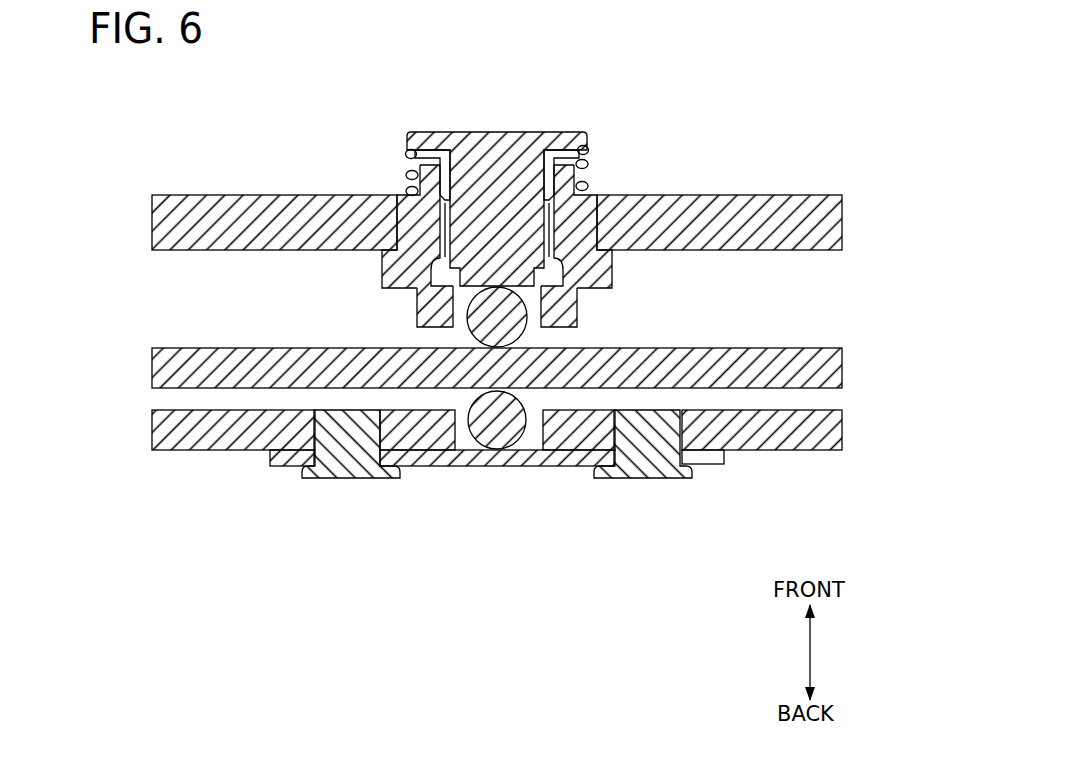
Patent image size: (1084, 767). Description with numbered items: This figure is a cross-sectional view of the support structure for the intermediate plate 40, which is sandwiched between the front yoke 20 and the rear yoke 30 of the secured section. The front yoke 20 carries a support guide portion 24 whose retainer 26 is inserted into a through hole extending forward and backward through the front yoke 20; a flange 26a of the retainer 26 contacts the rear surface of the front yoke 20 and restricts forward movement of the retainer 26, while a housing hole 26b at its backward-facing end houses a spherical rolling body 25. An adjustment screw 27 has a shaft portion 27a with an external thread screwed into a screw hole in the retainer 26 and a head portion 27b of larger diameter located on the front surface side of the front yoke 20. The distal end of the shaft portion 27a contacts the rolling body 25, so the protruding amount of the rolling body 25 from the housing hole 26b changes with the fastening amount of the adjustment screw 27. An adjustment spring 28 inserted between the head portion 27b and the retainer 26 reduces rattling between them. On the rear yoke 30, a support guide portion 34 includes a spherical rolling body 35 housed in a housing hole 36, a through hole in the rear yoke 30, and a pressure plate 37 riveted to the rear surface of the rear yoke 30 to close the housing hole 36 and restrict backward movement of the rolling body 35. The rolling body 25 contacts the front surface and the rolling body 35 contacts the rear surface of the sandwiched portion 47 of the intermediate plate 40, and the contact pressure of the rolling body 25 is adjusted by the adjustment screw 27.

The front yoke 20 is at (747, 207).
The support guide portion 24 is at (546, 177).
The rolling body 25 is at (483, 331).
The retainer 26 is at (561, 224).
The flange 26a is at (601, 267).
The housing hole 26b is at (543, 322).
The adjustment screw 27 is at (497, 146).
The shaft portion 27a is at (510, 217).
The head portion 27b is at (535, 40).
The adjustment spring 28 is at (408, 174).
The rear yoke 30 is at (792, 437).
The support guide portion 34 is at (497, 491).
The rolling body 35 is at (498, 432).
The housing hole 36 is at (532, 440).
The pressure plate 37 is at (465, 458).
The intermediate plate 40 is at (376, 372).
The sandwiched portion 47 is at (497, 326).